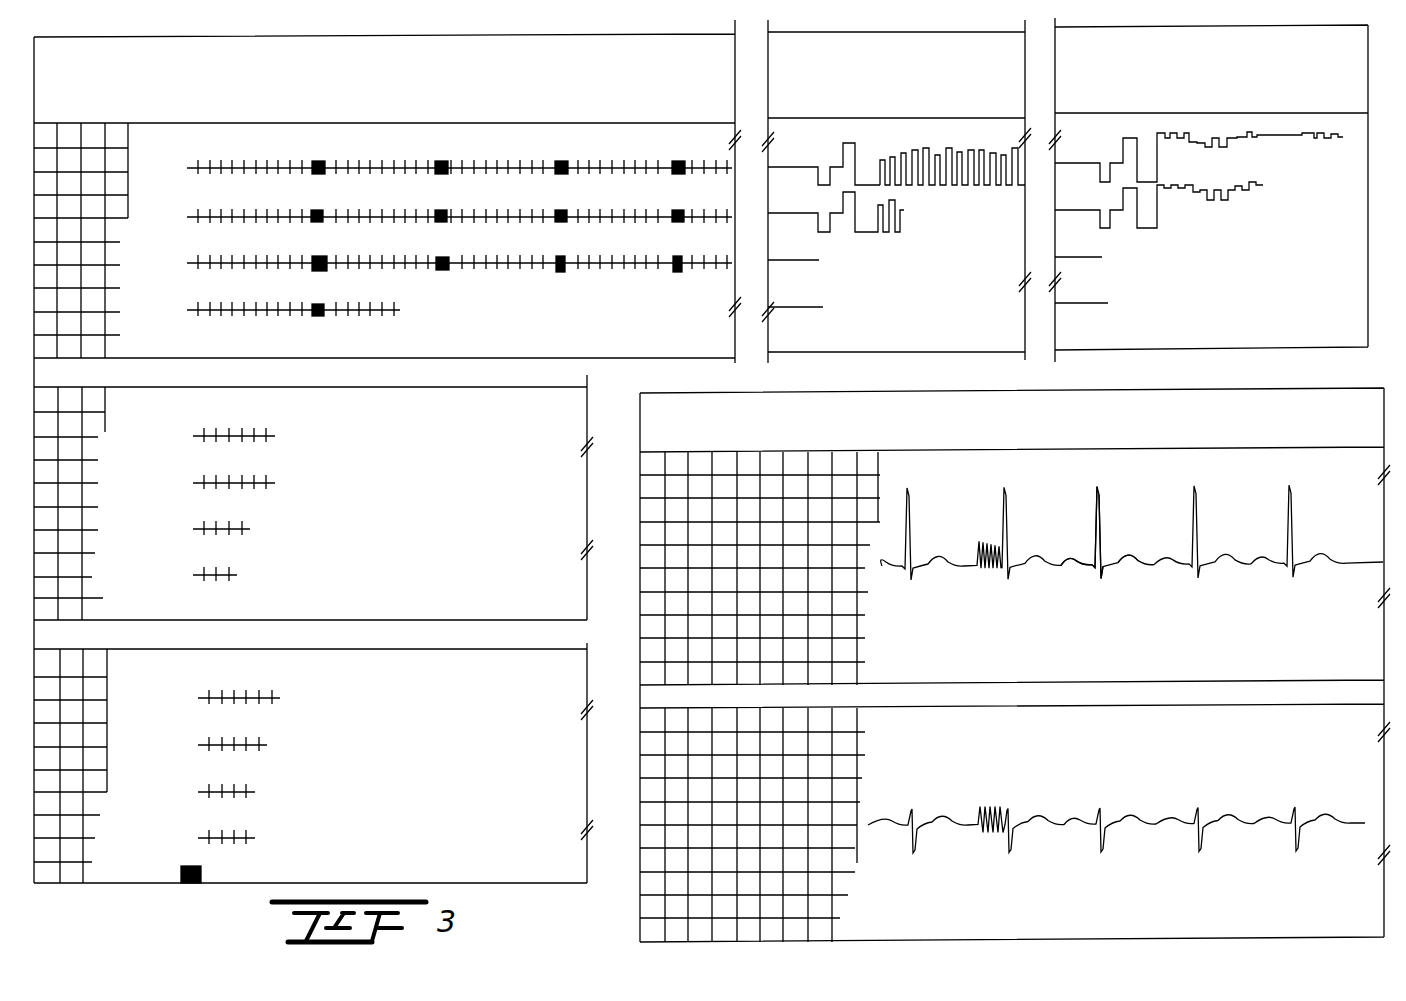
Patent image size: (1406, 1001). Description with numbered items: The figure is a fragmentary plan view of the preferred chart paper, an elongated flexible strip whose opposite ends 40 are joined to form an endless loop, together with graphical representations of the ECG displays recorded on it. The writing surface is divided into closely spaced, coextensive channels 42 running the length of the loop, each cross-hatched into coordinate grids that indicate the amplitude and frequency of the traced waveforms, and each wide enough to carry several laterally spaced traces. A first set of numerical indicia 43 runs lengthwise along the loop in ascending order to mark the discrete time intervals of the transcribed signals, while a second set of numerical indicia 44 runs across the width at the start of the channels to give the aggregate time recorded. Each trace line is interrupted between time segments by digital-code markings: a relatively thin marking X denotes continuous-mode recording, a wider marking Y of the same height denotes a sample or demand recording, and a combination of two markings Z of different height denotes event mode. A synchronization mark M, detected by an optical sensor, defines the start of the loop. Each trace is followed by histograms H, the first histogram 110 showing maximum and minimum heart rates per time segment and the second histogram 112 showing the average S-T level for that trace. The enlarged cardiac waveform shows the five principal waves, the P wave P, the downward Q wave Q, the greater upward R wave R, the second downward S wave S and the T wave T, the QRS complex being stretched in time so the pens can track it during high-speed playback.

The opposite ends 40 is at (34, 93).
The channels 42 is at (109, 130).
The first set of numerical indicia 43 is at (236, 46).
The second set of numerical indicia 44 is at (200, 143).
The first histogram 110 is at (937, 188).
The second histogram 112 is at (1210, 203).
The relatively thin marking X is at (316, 160).
The relatively wide marking Y is at (440, 272).
The combination of two markings Z is at (558, 272).
The synchronization mark M is at (180, 873).
The histograms H is at (841, 135).
The P wave P is at (1072, 556).
The Q wave Q is at (1094, 566).
The R wave R is at (1097, 490).
The S wave S is at (1101, 578).
The T wave T is at (1125, 549).